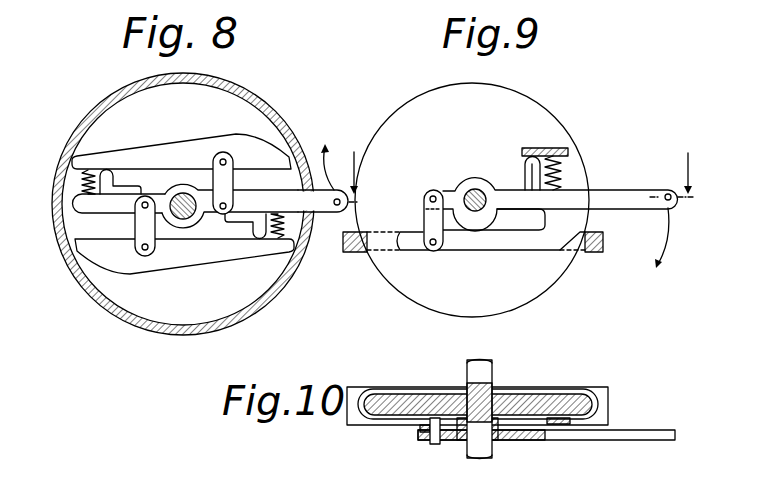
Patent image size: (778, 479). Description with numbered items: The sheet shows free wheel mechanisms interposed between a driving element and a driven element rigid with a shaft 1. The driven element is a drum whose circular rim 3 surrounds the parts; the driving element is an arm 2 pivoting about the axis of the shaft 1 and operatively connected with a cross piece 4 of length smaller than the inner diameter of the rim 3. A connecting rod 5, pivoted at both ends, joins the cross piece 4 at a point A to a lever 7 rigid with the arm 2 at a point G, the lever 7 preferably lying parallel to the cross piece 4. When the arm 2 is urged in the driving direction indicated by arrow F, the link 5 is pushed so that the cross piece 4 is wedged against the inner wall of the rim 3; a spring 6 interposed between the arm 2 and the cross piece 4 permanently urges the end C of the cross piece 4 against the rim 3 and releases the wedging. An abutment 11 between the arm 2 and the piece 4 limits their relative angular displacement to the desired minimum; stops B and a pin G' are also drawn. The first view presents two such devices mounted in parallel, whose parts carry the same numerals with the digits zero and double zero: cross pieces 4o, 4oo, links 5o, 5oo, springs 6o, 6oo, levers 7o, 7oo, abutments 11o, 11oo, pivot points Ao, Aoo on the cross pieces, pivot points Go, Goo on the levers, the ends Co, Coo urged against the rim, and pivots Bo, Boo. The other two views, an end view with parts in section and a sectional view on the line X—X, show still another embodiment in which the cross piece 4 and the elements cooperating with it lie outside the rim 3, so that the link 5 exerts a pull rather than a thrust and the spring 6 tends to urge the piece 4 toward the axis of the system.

In FIG. 9, the shaft 1 is at (475, 189).
In FIG. 10, the shaft 1 is at (484, 370).
In FIG. 8, the arm 2 is at (325, 204).
In FIG. 9, the arm 2 is at (637, 194).
In FIG. 10, the arm 2 is at (613, 437).
In FIG. 8, the rim 3 is at (261, 118).
In FIG. 9, the rim 3 is at (540, 104).
In FIG. 10, the rim 3 is at (608, 402).
In FIG. 9, the cross piece 4 is at (494, 246).
In FIG. 10, the cross piece 4 is at (410, 388).
In FIG. 9, the connecting rod 5 is at (432, 222).
In FIG. 10, the connecting rod 5 is at (430, 430).
In FIG. 9, the spring 6 is at (562, 171).
In FIG. 10, the spring 6 is at (558, 421).
In FIG. 9, the lever 7 is at (448, 190).
In FIG. 9, the abutment 11 is at (527, 169).
In FIG. 9, the point of thrust on cross piece A is at (433, 245).
In FIG. 9, the stop block B is at (365, 232).
In FIG. 9, the end of cross piece C is at (594, 244).
In FIG. 9, the pivot point on lever G is at (421, 179).
In FIG. 10, the pin G' is at (423, 442).
In FIG. 8, the driving direction arrow F is at (338, 165).
In FIG. 9, the driving direction arrow F is at (657, 238).
In FIG. 9, the section line X— X is at (521, 173).
In FIG. 8, the cross piece 4oo is at (188, 147).
In FIG. 8, the cross piece 4o is at (188, 257).
In FIG. 8, the connecting rod 5oo is at (226, 181).
In FIG. 8, the connecting rod 5o is at (156, 244).
In FIG. 8, the spring 6oo is at (90, 172).
In FIG. 8, the spring 6o is at (280, 216).
In FIG. 8, the lever 7oo is at (234, 207).
In FIG. 8, the lever 7o is at (142, 213).
In FIG. 8, the abutment 11oo is at (112, 177).
In FIG. 8, the abutment 11o is at (262, 233).
In FIG. 8, the point of thrust on cross piece Aoo is at (224, 159).
In FIG. 8, the point of thrust on cross piece Ao is at (145, 250).
In FIG. 8, the pivot point on lever Goo is at (224, 209).
In FIG. 8, the pivot point on lever Go is at (146, 203).
In FIG. 8, the pivot Boo is at (292, 157).
In FIG. 8, the pivot Bo is at (79, 255).
In FIG. 8, the end of cross piece Coo is at (73, 160).
In FIG. 8, the end of cross piece Co is at (294, 245).